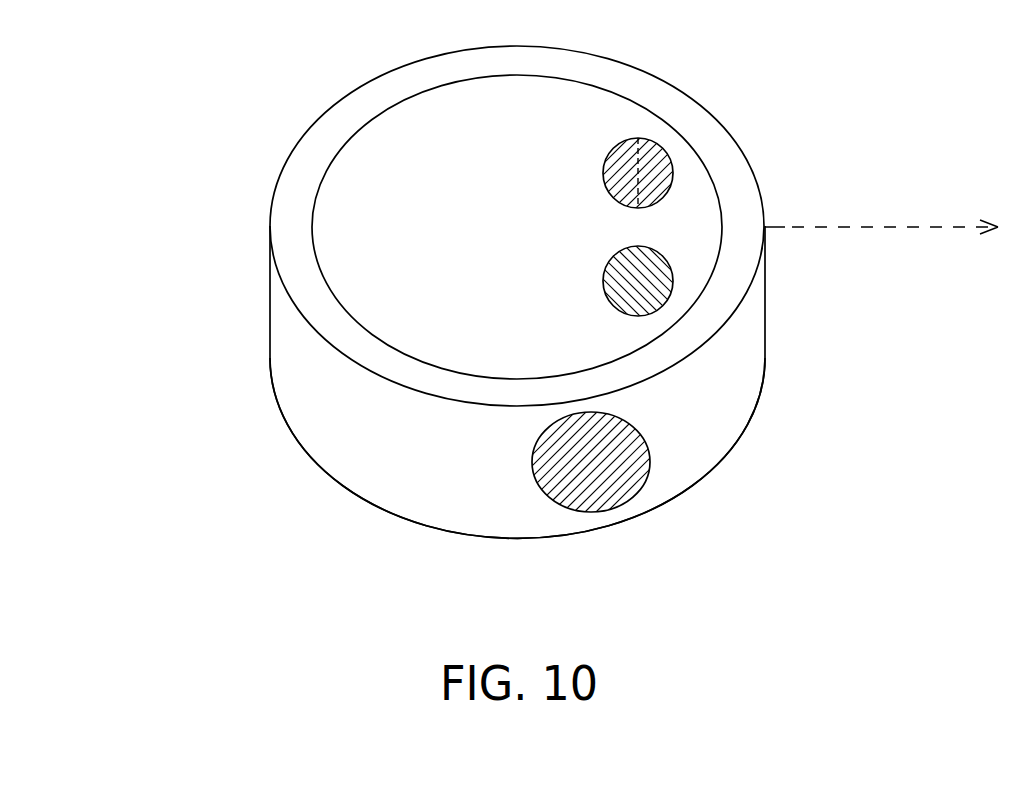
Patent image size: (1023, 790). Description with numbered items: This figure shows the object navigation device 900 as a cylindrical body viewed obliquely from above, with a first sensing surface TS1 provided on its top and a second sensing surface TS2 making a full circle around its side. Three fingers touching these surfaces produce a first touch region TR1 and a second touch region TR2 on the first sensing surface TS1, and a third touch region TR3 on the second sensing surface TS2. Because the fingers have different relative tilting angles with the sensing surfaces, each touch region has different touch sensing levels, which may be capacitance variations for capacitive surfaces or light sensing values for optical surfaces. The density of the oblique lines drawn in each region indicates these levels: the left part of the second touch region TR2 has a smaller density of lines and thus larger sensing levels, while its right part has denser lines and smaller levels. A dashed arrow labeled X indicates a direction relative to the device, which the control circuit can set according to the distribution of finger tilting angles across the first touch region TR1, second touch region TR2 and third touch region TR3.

The object navigation device 900 is at (287, 130).
The first sensing surface TS1 is at (665, 132).
The second sensing surface TS2 is at (700, 440).
The first touch region TR1 is at (665, 285).
The second touch region TR2 is at (662, 172).
The third touch region TR3 is at (605, 493).
The X axis X is at (881, 210).